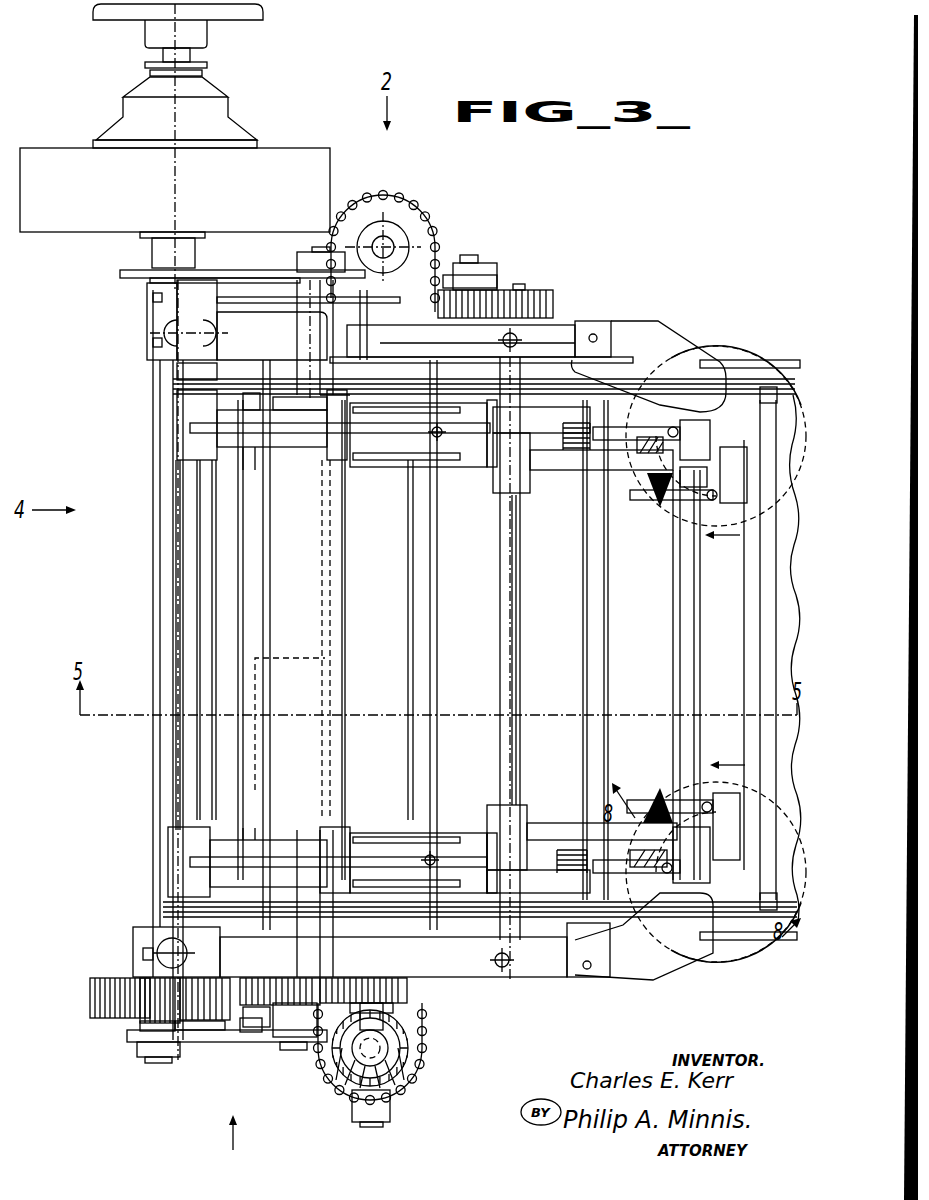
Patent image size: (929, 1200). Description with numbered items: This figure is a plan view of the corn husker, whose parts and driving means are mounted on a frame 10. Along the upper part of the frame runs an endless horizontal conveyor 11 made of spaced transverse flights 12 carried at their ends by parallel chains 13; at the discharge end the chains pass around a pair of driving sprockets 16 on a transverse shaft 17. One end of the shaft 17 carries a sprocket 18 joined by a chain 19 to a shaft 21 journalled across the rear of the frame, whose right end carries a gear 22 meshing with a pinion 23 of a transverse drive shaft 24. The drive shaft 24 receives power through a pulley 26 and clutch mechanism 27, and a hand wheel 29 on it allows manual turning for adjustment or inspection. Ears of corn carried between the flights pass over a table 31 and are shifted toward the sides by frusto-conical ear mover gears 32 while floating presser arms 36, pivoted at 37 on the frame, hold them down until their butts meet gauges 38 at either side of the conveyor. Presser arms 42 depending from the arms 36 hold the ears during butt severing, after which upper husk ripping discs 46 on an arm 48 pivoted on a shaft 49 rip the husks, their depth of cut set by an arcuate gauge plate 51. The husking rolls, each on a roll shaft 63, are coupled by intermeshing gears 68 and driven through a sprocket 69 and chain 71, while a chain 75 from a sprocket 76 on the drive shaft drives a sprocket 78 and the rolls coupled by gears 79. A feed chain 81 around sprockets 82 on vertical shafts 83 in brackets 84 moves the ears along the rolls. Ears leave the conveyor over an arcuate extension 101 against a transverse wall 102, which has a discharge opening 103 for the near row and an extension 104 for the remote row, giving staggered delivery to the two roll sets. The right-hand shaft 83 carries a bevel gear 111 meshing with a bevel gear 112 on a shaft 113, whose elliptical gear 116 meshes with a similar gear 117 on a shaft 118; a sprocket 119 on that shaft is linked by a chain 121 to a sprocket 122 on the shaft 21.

The frame 10 is at (565, 322).
The endless horizontal conveyor 11 is at (762, 620).
The flights 12 is at (410, 627).
The chains 13 is at (748, 390).
The driving sprockets 16 is at (337, 375).
The transverse shaft 17 is at (313, 250).
The sprocket 18 is at (303, 310).
The chain 19 is at (240, 303).
The shaft 21 is at (152, 1050).
The gear 22 is at (90, 998).
The pinion 23 is at (153, 1007).
The transverse drive shaft 24 is at (158, 772).
The pulley 26 is at (287, 153).
The clutch mechanism 27 is at (237, 112).
The hand wheel 29 is at (243, 19).
The table 31 is at (643, 644).
The ear mover gears 32 is at (731, 346).
The floating presser arms 36 is at (650, 476).
The pivot 37 is at (512, 532).
The gauges 38 is at (633, 327).
The floating presser arms 42 is at (543, 420).
The upper husk ripping discs 46 is at (455, 426).
The arm 48 is at (288, 442).
The shaft 49 is at (190, 625).
The arcuate gauge plate 51 is at (468, 460).
The roll shaft 63 is at (472, 262).
The intermeshing gears 68 is at (267, 1022).
The sprocket 69 is at (245, 1012).
The chain 71 is at (195, 1040).
The chain 75 is at (120, 274).
The sprocket 76 is at (152, 262).
The sprocket 78 is at (490, 272).
The intermeshing gears 79 is at (548, 293).
The feed chain 81 is at (405, 183).
The sprockets 82 is at (361, 212).
The shafts 83 is at (391, 240).
The brackets 84 is at (402, 240).
The arcuate extension 101 is at (275, 647).
The transverse wall 102 is at (213, 595).
The discharge opening 103 is at (262, 697).
The extension 104 is at (437, 598).
The bevel gear 111 is at (377, 1052).
The bevel gear 112 is at (333, 1088).
The shaft 113 is at (378, 1124).
The elliptical gear 116 is at (335, 988).
The elliptical gear 117 is at (283, 990).
The shaft 118 is at (305, 1050).
The sprocket 119 is at (287, 1050).
The chain 121 is at (212, 1042).
The sprocket 122 is at (140, 1045).